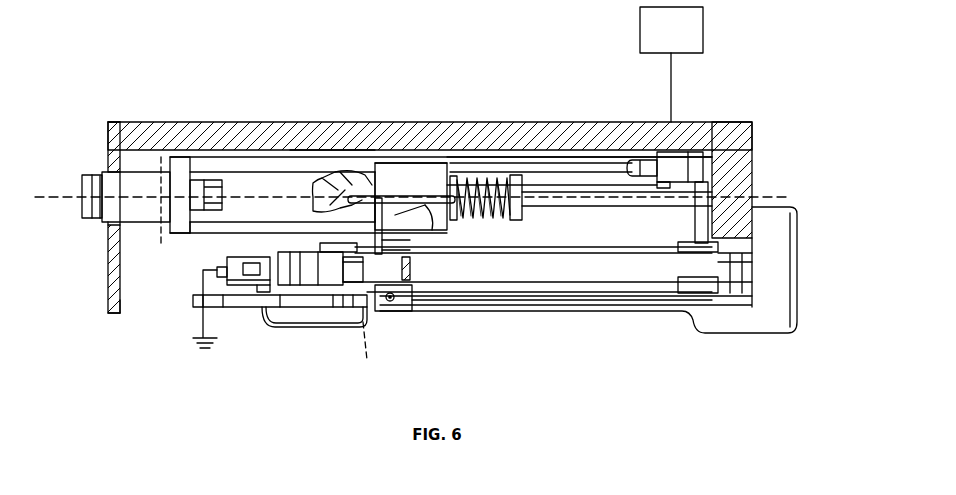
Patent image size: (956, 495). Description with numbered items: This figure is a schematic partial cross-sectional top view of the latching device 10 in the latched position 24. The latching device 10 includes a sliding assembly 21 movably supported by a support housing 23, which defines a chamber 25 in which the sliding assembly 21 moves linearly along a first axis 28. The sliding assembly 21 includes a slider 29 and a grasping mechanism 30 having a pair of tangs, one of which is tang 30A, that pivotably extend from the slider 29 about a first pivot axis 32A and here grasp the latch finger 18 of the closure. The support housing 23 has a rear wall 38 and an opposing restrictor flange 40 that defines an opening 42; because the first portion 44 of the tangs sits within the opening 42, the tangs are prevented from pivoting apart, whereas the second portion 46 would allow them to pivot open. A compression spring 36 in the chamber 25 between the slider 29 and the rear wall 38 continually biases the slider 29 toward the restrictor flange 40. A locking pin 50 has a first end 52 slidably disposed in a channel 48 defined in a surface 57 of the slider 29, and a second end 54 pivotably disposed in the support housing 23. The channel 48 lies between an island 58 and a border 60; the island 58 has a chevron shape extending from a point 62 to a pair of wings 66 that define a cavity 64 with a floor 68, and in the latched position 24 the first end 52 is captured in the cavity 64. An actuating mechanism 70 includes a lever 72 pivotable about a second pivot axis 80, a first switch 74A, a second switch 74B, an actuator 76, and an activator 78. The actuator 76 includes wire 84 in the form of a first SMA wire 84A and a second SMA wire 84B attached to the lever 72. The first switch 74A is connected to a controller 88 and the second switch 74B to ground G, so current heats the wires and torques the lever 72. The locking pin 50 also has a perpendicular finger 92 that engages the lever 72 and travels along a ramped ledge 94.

The latching device 10 is at (161, 86).
The latch finger 18 is at (87, 175).
The sliding assembly 21 is at (184, 246).
The support housing 23 is at (270, 122).
The latched position 24 is at (93, 243).
The chamber 25 is at (601, 167).
The first axis 28 is at (578, 148).
The slider 29 is at (230, 188).
The grasping mechanism 30 is at (143, 292).
The tang 30A is at (133, 215).
The first pivot axis 32A is at (147, 122).
The compression spring 36 is at (440, 175).
The rear wall 38 is at (742, 157).
The restrictor flange 40 is at (114, 313).
The opening 42 is at (96, 222).
The first portion 44 is at (108, 182).
The second portion 46 is at (107, 120).
The channel 48 is at (372, 175).
The locking pin 50 is at (396, 168).
The first end 52 is at (348, 200).
The second end 54 is at (497, 172).
The surface 57 is at (183, 160).
The island 58 is at (350, 165).
The border 60 is at (290, 122).
The point 62 is at (432, 208).
The cavity 64 is at (318, 185).
The wings 66 is at (325, 176).
The floor 68 is at (413, 205).
The actuating mechanism 70 is at (488, 322).
The lever 72 is at (300, 282).
The first switch 74A is at (690, 162).
The second switch 74B is at (233, 285).
The actuator 76 is at (566, 295).
The activator 78 is at (633, 160).
The second pivot axis 80 is at (367, 362).
The wire 84 is at (567, 247).
The first SMA wire 84A is at (490, 247).
The second SMA wire 84B is at (517, 283).
The controller 88 is at (671, 64).
The finger 92 is at (400, 245).
The ramped ledge 94 is at (302, 307).
The ground G is at (199, 336).